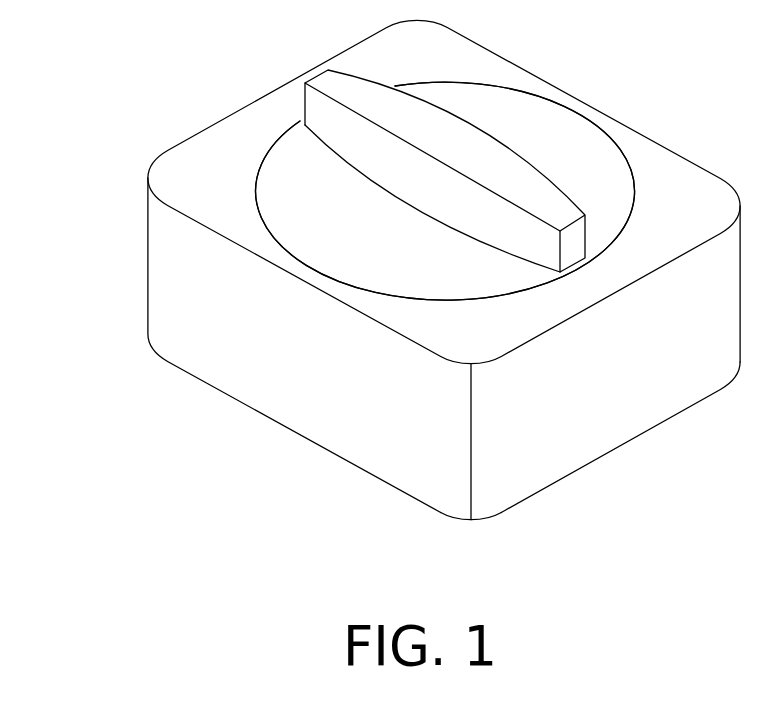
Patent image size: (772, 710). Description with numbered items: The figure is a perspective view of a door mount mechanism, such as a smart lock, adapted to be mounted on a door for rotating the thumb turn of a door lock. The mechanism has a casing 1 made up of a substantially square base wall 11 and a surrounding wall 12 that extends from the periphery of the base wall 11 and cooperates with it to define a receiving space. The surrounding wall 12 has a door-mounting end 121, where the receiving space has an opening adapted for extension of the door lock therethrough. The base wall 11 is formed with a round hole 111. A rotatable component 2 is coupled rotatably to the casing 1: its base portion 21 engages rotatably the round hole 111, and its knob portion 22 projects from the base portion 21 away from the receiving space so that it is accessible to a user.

The casing 1 is at (500, 525).
The base wall 11 is at (173, 172).
The round hole 111 is at (262, 163).
The surrounding wall 12 is at (372, 395).
The door-mounting end 121 is at (402, 475).
The rotatable component 2 is at (483, 307).
The base portion 21 is at (503, 282).
The knob portion 22 is at (558, 205).